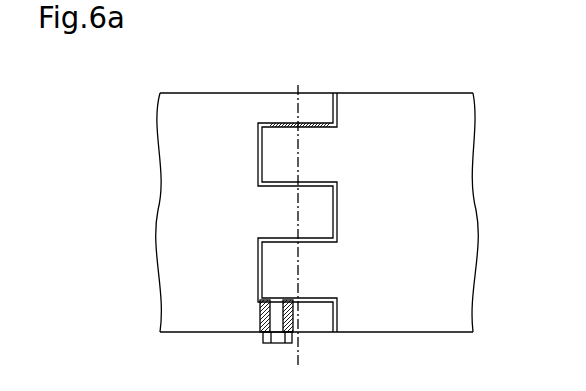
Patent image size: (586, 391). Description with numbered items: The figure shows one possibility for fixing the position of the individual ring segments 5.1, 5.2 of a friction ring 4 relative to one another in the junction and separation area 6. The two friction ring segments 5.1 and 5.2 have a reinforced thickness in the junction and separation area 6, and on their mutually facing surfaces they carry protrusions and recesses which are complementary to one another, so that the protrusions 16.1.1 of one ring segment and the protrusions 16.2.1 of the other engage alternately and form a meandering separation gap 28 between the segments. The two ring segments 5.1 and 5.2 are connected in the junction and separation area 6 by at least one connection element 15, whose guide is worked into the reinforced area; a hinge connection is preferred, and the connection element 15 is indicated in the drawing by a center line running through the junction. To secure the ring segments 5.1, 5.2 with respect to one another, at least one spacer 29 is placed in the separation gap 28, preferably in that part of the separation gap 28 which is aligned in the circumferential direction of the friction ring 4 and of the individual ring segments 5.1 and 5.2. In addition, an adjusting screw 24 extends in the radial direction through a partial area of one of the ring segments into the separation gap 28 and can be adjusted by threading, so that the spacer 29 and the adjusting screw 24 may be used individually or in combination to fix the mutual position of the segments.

The friction ring 4 is at (283, 66).
The junction and separation area 6 is at (322, 88).
The ring segment 5.1 is at (423, 117).
The ring segment 5.2 is at (192, 108).
The connection element 15 is at (298, 358).
The protrusion 16.1.1 is at (348, 166).
The protrusion 16.2.1 is at (310, 120).
The adjusting screw 24 is at (260, 316).
The separation gap 28 is at (338, 208).
The spacer 29 is at (290, 128).